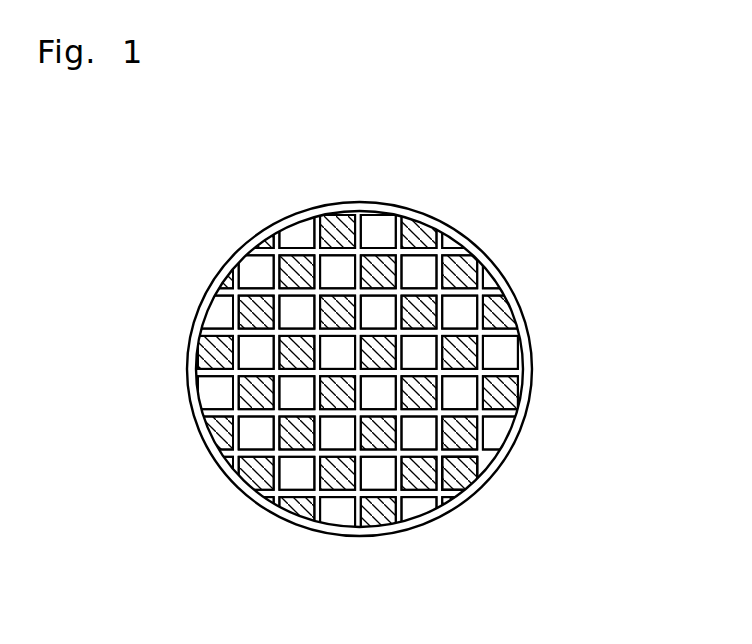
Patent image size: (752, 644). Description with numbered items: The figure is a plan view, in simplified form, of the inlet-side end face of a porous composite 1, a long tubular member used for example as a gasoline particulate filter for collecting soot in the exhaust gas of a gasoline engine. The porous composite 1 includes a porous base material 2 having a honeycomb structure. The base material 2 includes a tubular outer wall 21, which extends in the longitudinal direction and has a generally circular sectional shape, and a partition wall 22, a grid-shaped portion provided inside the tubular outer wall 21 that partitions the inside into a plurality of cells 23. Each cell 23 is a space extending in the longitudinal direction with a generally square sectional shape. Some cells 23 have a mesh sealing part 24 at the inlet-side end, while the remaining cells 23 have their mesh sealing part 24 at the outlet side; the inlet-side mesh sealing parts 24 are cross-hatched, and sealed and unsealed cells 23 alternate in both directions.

The porous composite 1 is at (215, 180).
The porous base material 2 is at (545, 225).
The tubular outer wall 21 is at (457, 242).
The partition wall 22 is at (480, 290).
The cells 23 is at (463, 308).
The mesh sealing part 24 is at (257, 302).